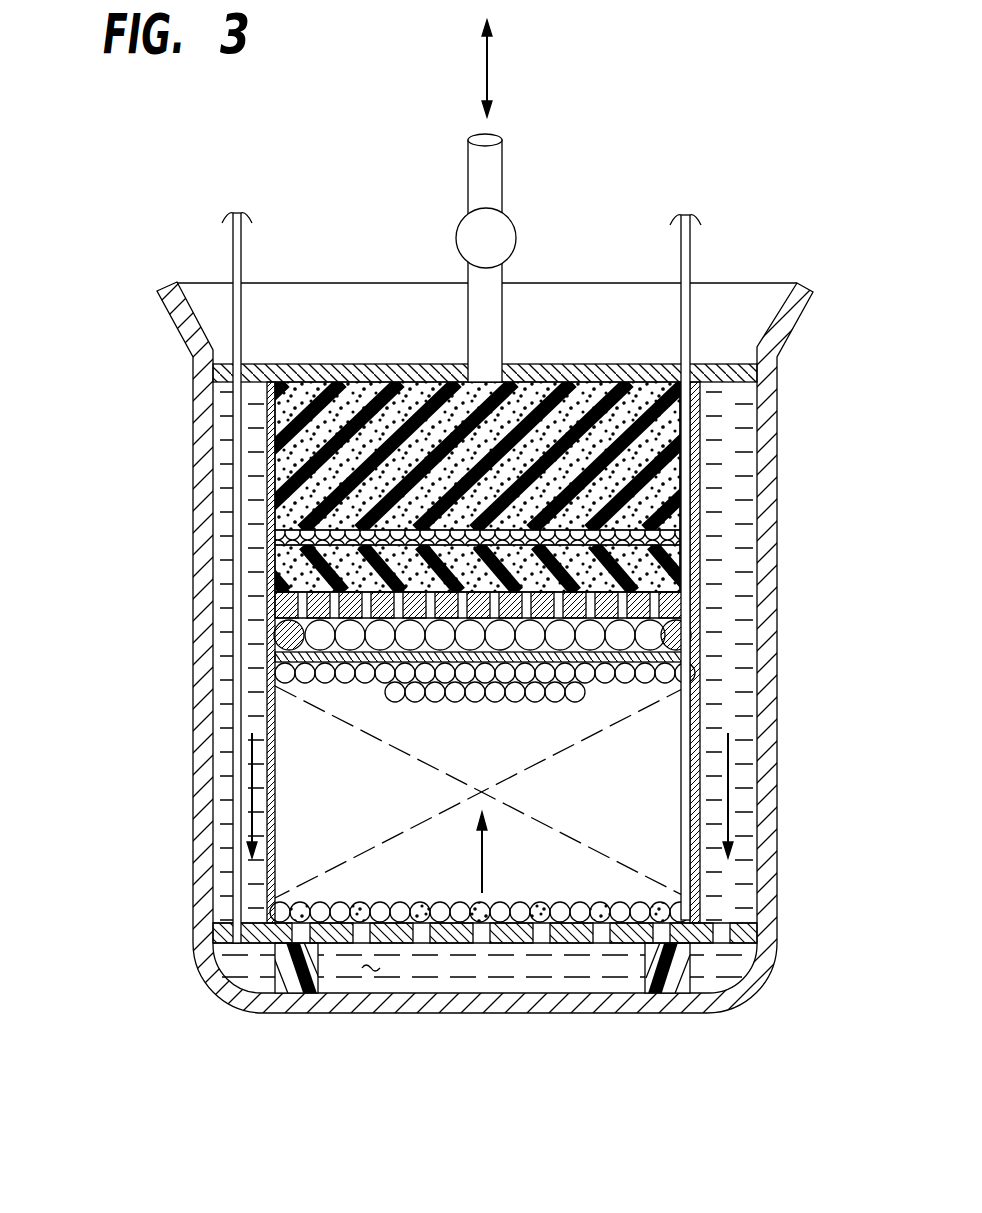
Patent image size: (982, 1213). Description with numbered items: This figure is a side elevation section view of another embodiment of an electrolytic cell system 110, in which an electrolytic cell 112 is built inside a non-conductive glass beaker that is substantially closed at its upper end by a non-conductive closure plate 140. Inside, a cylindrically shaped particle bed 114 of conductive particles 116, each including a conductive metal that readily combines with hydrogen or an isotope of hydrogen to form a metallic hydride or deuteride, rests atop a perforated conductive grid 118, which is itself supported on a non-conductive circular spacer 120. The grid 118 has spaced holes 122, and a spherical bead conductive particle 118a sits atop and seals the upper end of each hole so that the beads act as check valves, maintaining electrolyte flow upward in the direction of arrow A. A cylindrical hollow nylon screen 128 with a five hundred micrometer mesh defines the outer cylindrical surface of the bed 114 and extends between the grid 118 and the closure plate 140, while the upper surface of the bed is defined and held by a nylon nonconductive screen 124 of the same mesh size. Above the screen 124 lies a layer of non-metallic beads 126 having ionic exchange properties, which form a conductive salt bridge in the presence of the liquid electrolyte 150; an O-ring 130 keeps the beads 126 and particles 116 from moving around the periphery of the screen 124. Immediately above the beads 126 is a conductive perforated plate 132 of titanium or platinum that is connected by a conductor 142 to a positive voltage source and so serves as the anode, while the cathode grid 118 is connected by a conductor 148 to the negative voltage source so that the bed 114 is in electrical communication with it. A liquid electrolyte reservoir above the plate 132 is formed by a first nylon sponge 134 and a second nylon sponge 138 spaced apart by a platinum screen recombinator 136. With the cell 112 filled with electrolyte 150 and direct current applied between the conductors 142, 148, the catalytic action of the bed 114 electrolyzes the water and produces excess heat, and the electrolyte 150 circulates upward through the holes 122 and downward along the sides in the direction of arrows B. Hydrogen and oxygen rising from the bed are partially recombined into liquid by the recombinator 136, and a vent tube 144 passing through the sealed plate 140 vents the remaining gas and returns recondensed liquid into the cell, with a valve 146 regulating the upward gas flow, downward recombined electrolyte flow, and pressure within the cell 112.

The electrolytic cell system 110 is at (177, 553).
The electrolytic cell 112 is at (777, 625).
The particle bed 114 is at (631, 768).
The conductive particles 116 is at (600, 692).
The perforated conductive grid 118 is at (738, 925).
The spherical bead conductive particle 118a is at (660, 900).
The non-conductive circular spacer 120 is at (690, 967).
The holes 122 is at (602, 947).
The nylon nonconductive screen 124 is at (305, 700).
The non-metallic beads 126 is at (647, 637).
The cylindrical hollow nylon screen 128 is at (267, 808).
The O-ring 130 is at (300, 620).
The conductive perforated plate 132 is at (290, 636).
The first nylon sponge 134 is at (682, 567).
The platinum screen recombinator 136 is at (642, 538).
The second nylon sponge 138 is at (653, 450).
The non-conductive closure plate 140 is at (733, 363).
The conductor 142 is at (690, 305).
The vent tube 144 is at (503, 323).
The valve 146 is at (517, 238).
The conductor 148 is at (242, 252).
The liquid electrolyte 150 is at (371, 975).